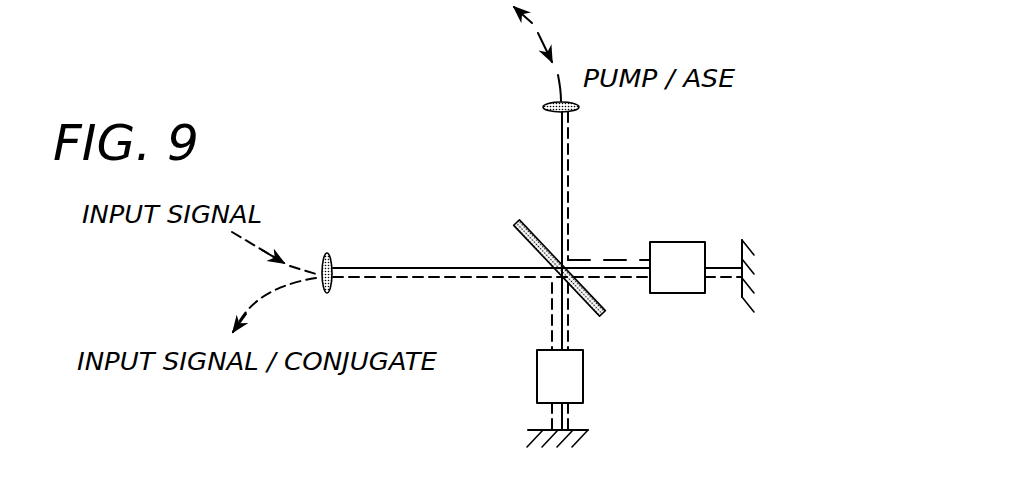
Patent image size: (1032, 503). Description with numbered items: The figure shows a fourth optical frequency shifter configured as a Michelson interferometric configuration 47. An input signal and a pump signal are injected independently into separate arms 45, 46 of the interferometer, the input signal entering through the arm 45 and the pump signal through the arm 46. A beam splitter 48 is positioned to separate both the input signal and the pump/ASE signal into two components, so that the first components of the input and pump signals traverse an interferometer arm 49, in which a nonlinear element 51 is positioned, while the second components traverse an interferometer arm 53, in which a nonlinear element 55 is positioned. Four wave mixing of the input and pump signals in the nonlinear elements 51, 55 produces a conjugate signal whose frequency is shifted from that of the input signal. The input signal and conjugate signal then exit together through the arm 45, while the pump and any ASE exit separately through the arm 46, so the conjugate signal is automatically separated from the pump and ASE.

The interferometer arm 45 is at (395, 267).
The interferometer arm 46 is at (570, 187).
The Michelson interferometric configuration 47 is at (758, 179).
The beam splitter 48 is at (604, 314).
The interferometer arm 49 is at (552, 313).
The nonlinear element 51 is at (570, 378).
The interferometer arm 53 is at (590, 260).
The nonlinear element 55 is at (680, 284).